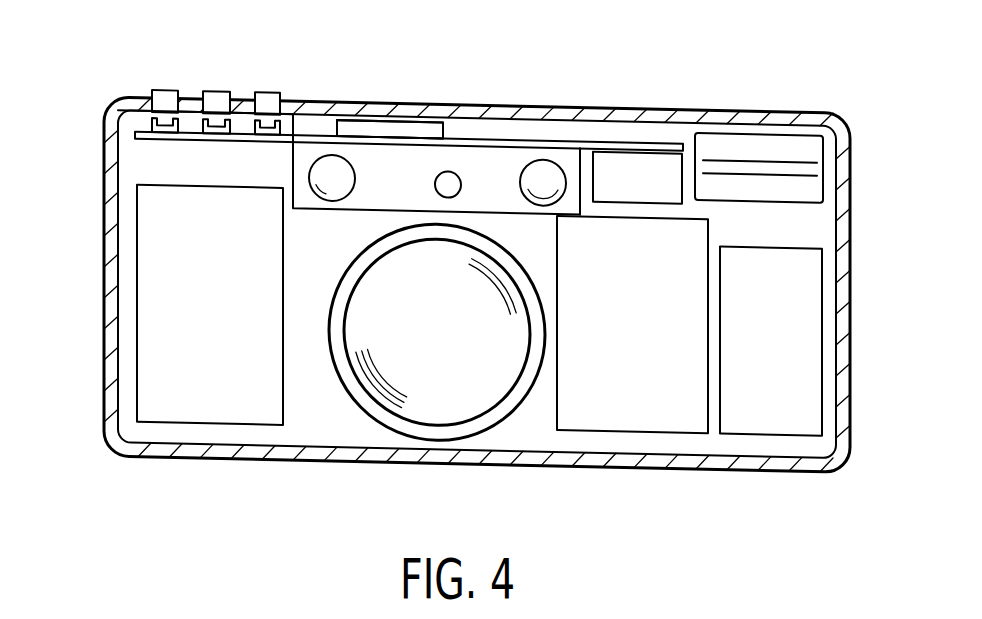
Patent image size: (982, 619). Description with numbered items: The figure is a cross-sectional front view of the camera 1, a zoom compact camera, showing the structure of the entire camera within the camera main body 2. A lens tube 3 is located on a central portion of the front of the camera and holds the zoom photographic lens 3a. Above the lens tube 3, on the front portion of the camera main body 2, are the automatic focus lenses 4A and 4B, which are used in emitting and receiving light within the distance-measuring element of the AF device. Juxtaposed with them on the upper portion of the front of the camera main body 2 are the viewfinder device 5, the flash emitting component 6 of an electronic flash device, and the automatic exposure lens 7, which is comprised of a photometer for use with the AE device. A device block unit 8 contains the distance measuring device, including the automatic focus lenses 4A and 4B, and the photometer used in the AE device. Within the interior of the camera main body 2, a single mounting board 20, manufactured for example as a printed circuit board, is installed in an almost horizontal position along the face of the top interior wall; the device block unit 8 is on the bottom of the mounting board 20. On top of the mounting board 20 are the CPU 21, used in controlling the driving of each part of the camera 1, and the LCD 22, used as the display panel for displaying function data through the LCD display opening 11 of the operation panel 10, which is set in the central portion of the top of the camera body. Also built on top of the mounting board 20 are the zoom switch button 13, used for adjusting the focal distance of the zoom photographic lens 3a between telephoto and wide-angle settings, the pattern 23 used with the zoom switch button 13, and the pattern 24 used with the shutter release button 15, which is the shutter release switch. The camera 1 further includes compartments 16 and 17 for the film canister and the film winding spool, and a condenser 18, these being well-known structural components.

The camera 1 is at (762, 68).
The camera main body 2 is at (800, 472).
The lens tube 3 is at (475, 427).
The zoom photographic lens 3a is at (418, 403).
The automatic focus lens 4A is at (335, 178).
The automatic focus lens 4B is at (543, 165).
The viewfinder device 5 is at (668, 143).
The flash emitting component 6 is at (771, 122).
The automatic exposure lens 7 is at (452, 177).
The device block unit 8 is at (572, 157).
The operation panel 10 is at (425, 86).
The LCD display opening 11 is at (340, 99).
The zoom switch button 13 is at (265, 102).
The shutter release button 15 is at (167, 98).
The film canister compartment 16 is at (205, 407).
The film winding spool compartment 17 is at (628, 420).
The condenser 18 is at (773, 422).
The mounting board 20 is at (641, 143).
The CPU 21 is at (367, 128).
The LCD 22 is at (390, 129).
The pattern 23 is at (263, 132).
The pattern 24 is at (140, 120).